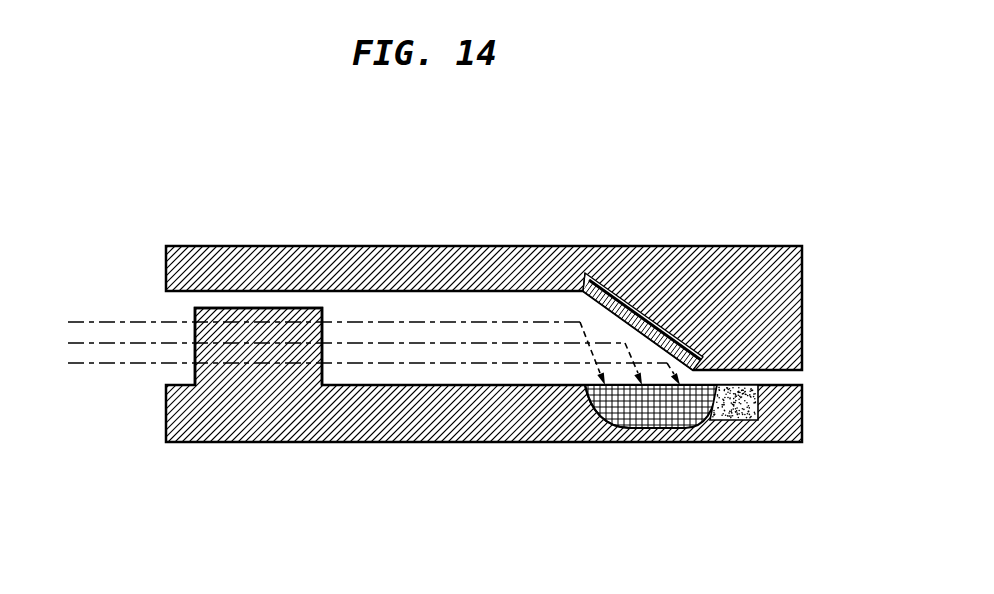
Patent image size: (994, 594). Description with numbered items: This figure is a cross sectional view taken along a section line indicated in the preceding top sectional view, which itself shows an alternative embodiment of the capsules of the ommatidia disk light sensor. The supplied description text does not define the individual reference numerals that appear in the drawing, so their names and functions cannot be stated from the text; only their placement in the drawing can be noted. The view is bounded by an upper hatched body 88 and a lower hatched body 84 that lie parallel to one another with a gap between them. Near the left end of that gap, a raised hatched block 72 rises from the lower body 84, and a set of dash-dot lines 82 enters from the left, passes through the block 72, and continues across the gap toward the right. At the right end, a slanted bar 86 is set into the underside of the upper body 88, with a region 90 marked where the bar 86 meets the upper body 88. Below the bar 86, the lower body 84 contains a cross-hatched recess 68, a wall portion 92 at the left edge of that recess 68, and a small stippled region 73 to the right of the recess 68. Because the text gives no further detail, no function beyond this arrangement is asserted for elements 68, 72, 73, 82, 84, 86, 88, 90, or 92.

The sample well 68 is at (663, 413).
The light input block 72 is at (254, 308).
The absorbent pad 73 is at (752, 385).
The light beam 82 is at (120, 322).
The lower housing 84 is at (430, 420).
The reflective element 86 is at (641, 280).
The upper housing 88 is at (455, 253).
The reflector edge 90 is at (585, 294).
The well wall 92 is at (564, 386).